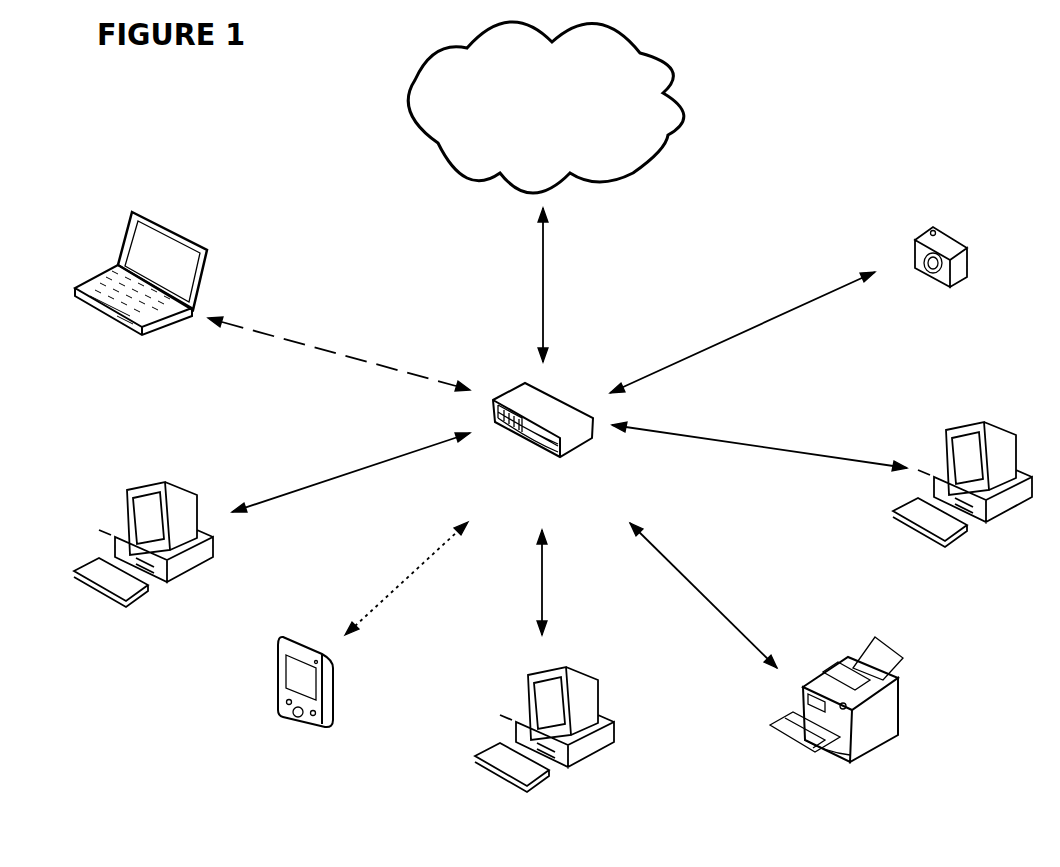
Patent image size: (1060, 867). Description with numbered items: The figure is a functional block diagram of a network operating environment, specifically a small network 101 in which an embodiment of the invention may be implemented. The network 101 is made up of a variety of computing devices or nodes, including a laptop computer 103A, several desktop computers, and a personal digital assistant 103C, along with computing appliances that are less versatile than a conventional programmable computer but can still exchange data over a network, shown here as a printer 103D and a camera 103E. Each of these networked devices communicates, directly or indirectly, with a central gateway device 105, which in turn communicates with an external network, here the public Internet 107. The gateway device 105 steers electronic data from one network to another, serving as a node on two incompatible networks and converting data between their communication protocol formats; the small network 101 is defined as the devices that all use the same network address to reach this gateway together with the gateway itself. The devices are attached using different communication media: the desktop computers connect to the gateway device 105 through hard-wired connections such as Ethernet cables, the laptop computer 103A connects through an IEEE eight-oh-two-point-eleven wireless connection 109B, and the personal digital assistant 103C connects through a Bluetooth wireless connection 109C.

The network 101 is at (160, 707).
The laptop computer 103A is at (141, 308).
The personal digital assistant 103C is at (305, 710).
The printer 103D is at (770, 667).
The camera 103E is at (942, 297).
The gateway device 105 is at (543, 359).
The Internet 107 is at (546, 107).
The wireless connection 109B is at (331, 352).
The Bluetooth wireless connection 109C is at (395, 592).